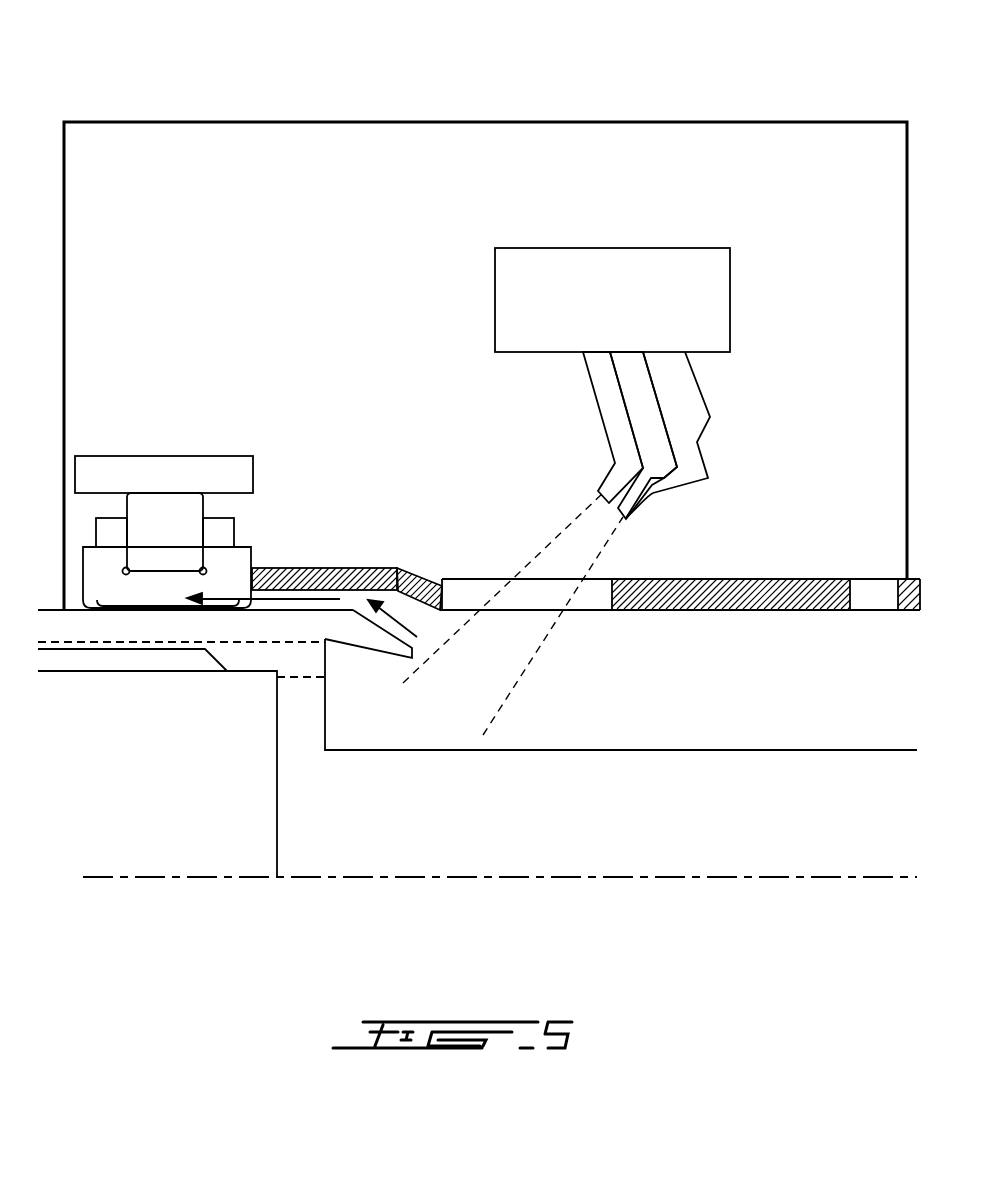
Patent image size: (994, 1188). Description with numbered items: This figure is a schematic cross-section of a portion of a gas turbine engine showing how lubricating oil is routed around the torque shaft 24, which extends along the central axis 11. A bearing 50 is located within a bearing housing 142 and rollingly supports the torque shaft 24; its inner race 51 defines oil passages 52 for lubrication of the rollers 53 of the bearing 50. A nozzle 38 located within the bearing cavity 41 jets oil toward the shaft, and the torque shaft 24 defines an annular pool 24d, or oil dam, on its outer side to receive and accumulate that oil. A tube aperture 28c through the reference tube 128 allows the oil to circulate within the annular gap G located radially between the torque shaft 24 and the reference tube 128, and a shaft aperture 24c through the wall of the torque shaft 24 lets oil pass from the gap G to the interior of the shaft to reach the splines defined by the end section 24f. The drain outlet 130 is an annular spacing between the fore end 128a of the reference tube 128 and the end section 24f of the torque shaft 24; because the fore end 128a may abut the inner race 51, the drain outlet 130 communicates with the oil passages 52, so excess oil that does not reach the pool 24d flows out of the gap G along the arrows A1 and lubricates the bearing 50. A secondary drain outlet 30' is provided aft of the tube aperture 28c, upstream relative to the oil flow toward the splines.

The bearing housing 142 is at (300, 120).
The bearing cavity 41 is at (628, 204).
The nozzle 38 is at (608, 392).
The bearing 50 is at (150, 432).
The rollers 53 is at (177, 527).
The oil passages 52 is at (156, 608).
The inner race 51 is at (102, 575).
The fore end 128a is at (283, 556).
The drain outlet 130 is at (268, 591).
The arrows A1 is at (395, 615).
The tube aperture 28c is at (455, 595).
The reference tube 128 is at (780, 590).
The secondary drain outlet 30' is at (923, 556).
The end section 24f is at (97, 625).
The shaft aperture 24c is at (302, 680).
The pool 24d is at (354, 666).
The annular gap G is at (733, 710).
The torque shaft 24 is at (781, 775).
The central axis 11 is at (685, 878).